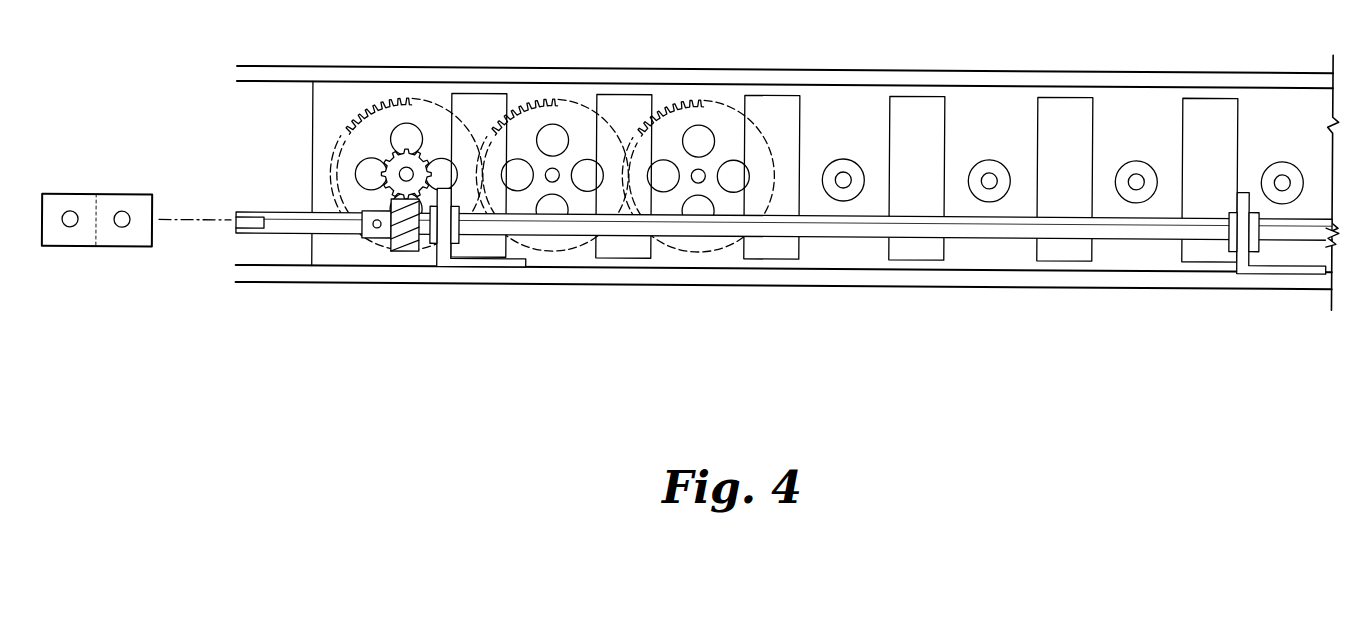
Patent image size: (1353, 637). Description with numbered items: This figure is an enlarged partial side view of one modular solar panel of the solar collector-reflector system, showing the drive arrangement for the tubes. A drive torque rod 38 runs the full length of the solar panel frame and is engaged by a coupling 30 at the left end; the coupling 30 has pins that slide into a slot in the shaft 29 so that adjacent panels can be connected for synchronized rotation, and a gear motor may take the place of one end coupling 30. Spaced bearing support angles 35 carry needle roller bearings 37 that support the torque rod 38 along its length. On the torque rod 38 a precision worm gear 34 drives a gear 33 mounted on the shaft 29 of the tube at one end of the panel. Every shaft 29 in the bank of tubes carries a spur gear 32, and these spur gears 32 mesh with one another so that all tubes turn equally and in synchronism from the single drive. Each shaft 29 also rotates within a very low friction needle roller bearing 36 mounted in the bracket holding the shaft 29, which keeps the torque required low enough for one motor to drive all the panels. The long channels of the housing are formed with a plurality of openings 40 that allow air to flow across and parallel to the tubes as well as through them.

The shaft 29 is at (413, 171).
The coupling 30 is at (116, 200).
The spur gear 32 is at (404, 102).
The gear 33 is at (388, 171).
The worm gear 34 is at (411, 250).
The bearing support angle 35 is at (483, 262).
The needle roller bearing 36 is at (854, 164).
The needle roller bearing 37 is at (461, 226).
The drive torque rod 38 is at (978, 231).
The opening 40 is at (1210, 130).